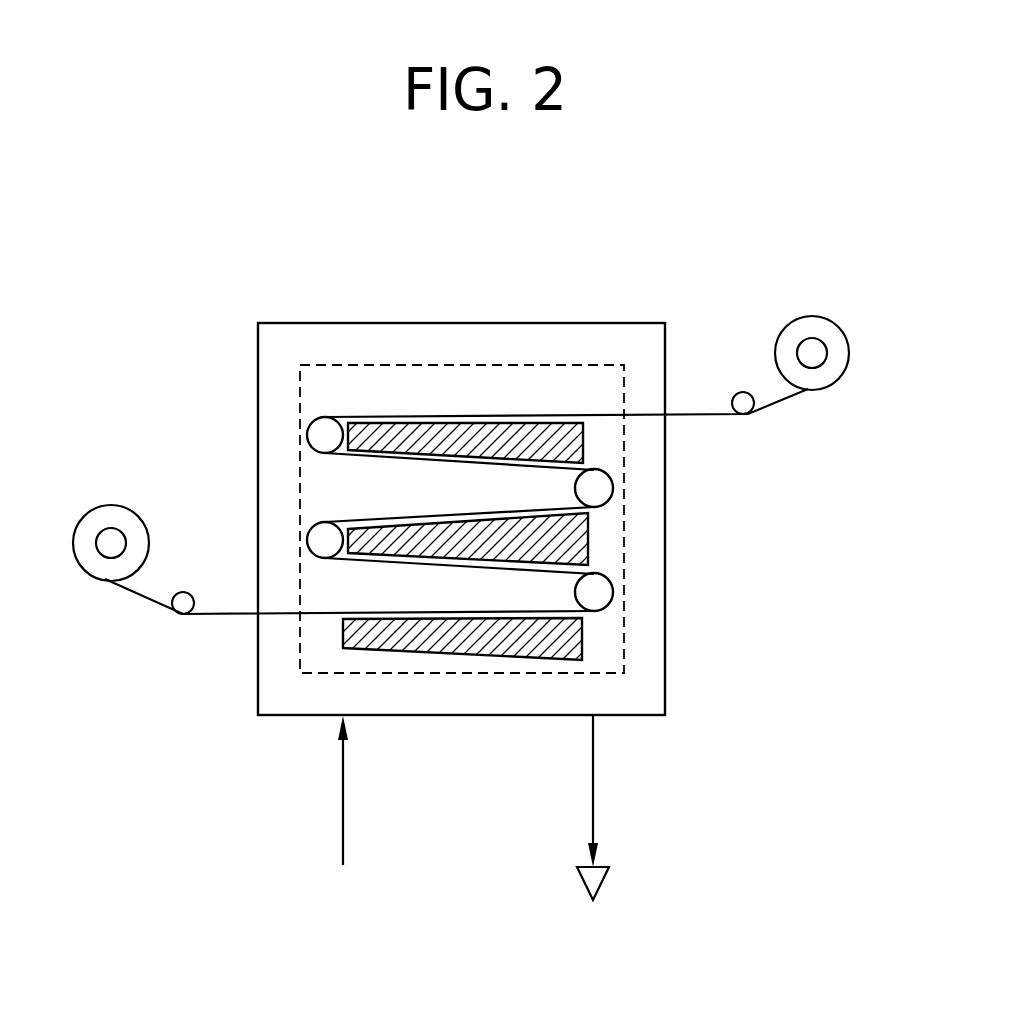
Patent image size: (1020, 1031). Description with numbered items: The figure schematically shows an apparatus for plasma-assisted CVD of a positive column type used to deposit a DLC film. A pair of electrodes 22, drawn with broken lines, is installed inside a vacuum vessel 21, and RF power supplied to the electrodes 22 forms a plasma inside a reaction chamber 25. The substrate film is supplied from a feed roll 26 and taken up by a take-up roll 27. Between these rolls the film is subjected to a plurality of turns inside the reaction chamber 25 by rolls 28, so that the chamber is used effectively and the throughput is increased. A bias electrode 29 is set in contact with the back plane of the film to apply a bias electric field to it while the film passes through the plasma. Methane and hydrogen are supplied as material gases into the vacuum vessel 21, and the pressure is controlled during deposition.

The vacuum vessel 21 is at (428, 323).
The pair of electrodes 22 is at (557, 363).
The reaction chamber 25 is at (365, 475).
The feed roll 26 is at (850, 358).
The take-up roll 27 is at (80, 566).
The rolls 28 is at (307, 436).
The bias electrode 29 is at (488, 417).